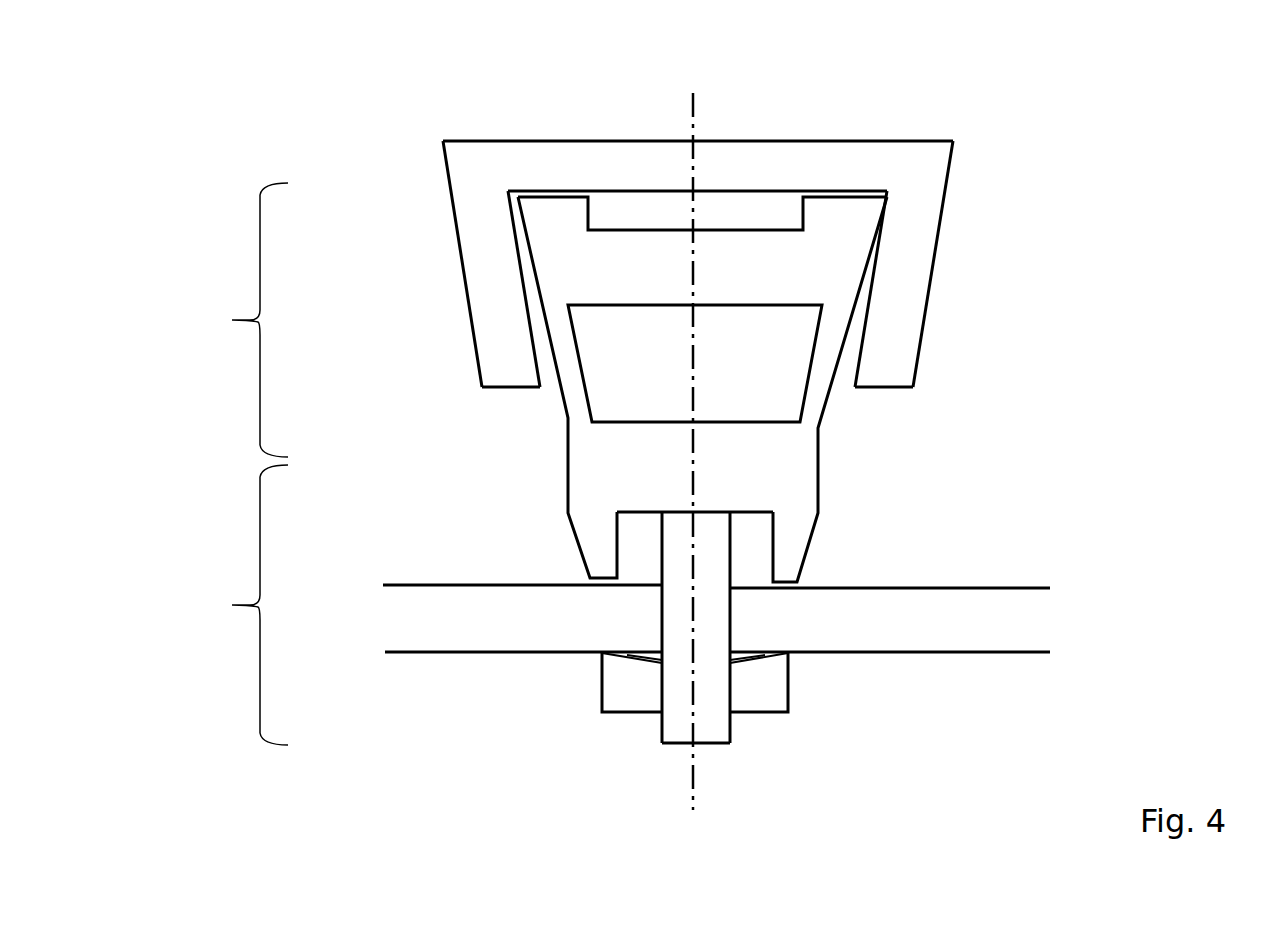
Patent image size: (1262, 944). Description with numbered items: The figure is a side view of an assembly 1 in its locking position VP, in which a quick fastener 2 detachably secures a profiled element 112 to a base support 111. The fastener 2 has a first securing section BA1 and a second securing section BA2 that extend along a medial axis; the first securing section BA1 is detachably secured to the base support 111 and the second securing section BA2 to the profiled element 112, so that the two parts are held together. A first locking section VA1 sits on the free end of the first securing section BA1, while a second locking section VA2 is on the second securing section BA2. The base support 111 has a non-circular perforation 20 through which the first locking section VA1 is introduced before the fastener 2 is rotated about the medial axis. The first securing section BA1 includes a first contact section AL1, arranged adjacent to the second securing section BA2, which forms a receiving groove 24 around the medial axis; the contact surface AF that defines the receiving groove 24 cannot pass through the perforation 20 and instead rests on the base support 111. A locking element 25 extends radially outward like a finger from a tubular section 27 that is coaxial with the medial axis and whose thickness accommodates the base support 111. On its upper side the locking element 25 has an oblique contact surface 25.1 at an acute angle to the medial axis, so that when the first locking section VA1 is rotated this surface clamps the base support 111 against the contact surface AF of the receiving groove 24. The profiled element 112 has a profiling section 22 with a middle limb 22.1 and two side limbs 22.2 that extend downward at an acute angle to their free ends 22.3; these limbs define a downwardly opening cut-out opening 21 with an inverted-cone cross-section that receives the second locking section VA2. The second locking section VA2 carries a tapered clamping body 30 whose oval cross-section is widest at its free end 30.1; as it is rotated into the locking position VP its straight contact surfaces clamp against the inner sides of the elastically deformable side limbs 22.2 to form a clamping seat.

The assembly 1 is at (290, 140).
The quick fastener 2 is at (772, 478).
The perforation 20 is at (660, 608).
The cut-out opening 21 is at (550, 378).
The profiling section 22 is at (420, 228).
The middle limb 22.1 is at (640, 172).
The side limb 22.2 is at (488, 290).
The free end 22.3 is at (493, 393).
The receiving groove 24 is at (740, 562).
The locking element 25 is at (612, 675).
The oblique contact surface 25.1 is at (793, 658).
The tubular section 27 is at (712, 732).
The clamping body 30 is at (847, 273).
The free end 30.1 is at (890, 197).
The base support 111 is at (415, 630).
The profiled element 112 is at (968, 163).
The first contact section AL1 is at (573, 548).
The contact surface AF is at (792, 581).
The first locking section VA1 is at (612, 735).
The second locking section VA2 is at (455, 322).
The first securing section BA1 is at (229, 605).
The second securing section BA2 is at (219, 320).
The locking position VP is at (1103, 350).